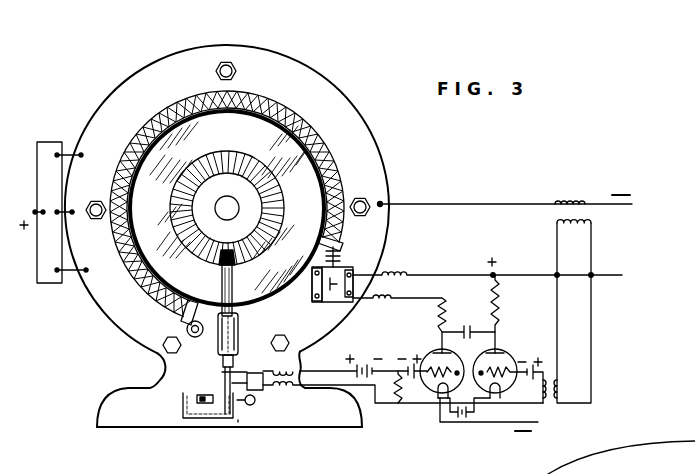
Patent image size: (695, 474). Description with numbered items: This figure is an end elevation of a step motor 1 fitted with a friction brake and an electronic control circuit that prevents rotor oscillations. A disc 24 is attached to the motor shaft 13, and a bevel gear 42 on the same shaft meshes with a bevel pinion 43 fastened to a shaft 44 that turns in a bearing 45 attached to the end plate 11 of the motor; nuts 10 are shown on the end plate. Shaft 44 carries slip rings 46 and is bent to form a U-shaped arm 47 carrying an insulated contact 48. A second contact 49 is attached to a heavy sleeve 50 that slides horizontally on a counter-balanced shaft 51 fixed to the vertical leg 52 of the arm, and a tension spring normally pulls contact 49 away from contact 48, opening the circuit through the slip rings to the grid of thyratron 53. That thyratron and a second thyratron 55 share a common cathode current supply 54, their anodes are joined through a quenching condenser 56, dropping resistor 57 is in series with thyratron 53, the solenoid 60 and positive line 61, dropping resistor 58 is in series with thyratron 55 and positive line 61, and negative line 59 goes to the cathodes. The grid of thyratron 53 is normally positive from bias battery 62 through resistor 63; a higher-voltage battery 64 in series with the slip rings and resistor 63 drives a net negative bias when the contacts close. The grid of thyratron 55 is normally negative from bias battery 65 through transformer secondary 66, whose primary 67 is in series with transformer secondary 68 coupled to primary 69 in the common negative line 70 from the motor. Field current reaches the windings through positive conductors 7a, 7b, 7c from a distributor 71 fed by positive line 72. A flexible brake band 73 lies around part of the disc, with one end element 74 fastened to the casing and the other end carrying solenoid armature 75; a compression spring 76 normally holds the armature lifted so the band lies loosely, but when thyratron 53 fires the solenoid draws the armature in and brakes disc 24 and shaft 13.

The step motor 1 is at (171, 44).
The nuts 10 is at (237, 64).
The end plate 11 is at (375, 141).
The shaft 13 is at (227, 196).
The disc 24 is at (280, 292).
The bevel gear 42 is at (224, 150).
The bevel pinion 43 is at (218, 265).
The shaft 44 is at (231, 290).
The bearing 45 is at (240, 334).
The slip rings 46 is at (222, 377).
The U-shaped arm 47 is at (203, 417).
The insulated contact 48 is at (183, 401).
The contact 49 is at (162, 384).
The heavy sleeve 50 is at (217, 394).
The counter-balanced shaft 51 is at (236, 407).
The vertical leg 52 is at (238, 421).
The thyratron 53 is at (437, 352).
The common cathode current supply 54 is at (461, 418).
The thyratron 55 is at (508, 352).
The quenching condenser 56 is at (467, 326).
The dropping resistor 57 is at (437, 313).
The dropping resistor 58 is at (497, 315).
The negative line 59 is at (483, 423).
The solenoid 60 is at (337, 305).
The positive line 61 is at (611, 277).
The bias battery 62 is at (410, 365).
The resistor 63 is at (397, 401).
The battery 64 is at (367, 365).
The bias battery 65 is at (531, 364).
The transformer secondary 66 is at (529, 388).
The transformer primary 67 is at (559, 395).
The transformer secondary 68 is at (593, 225).
The transformer primary 69 is at (573, 204).
The common negative line 70 is at (447, 206).
The distributor 71 is at (50, 287).
The positive line 72 is at (34, 211).
The flexible brake band 73 is at (291, 137).
The end element 74 is at (186, 330).
The solenoid armature 75 is at (345, 257).
The compression spring 76 is at (352, 268).
The positive conductor 7a is at (68, 153).
The positive conductor 7b is at (64, 209).
The positive conductor 7c is at (67, 275).